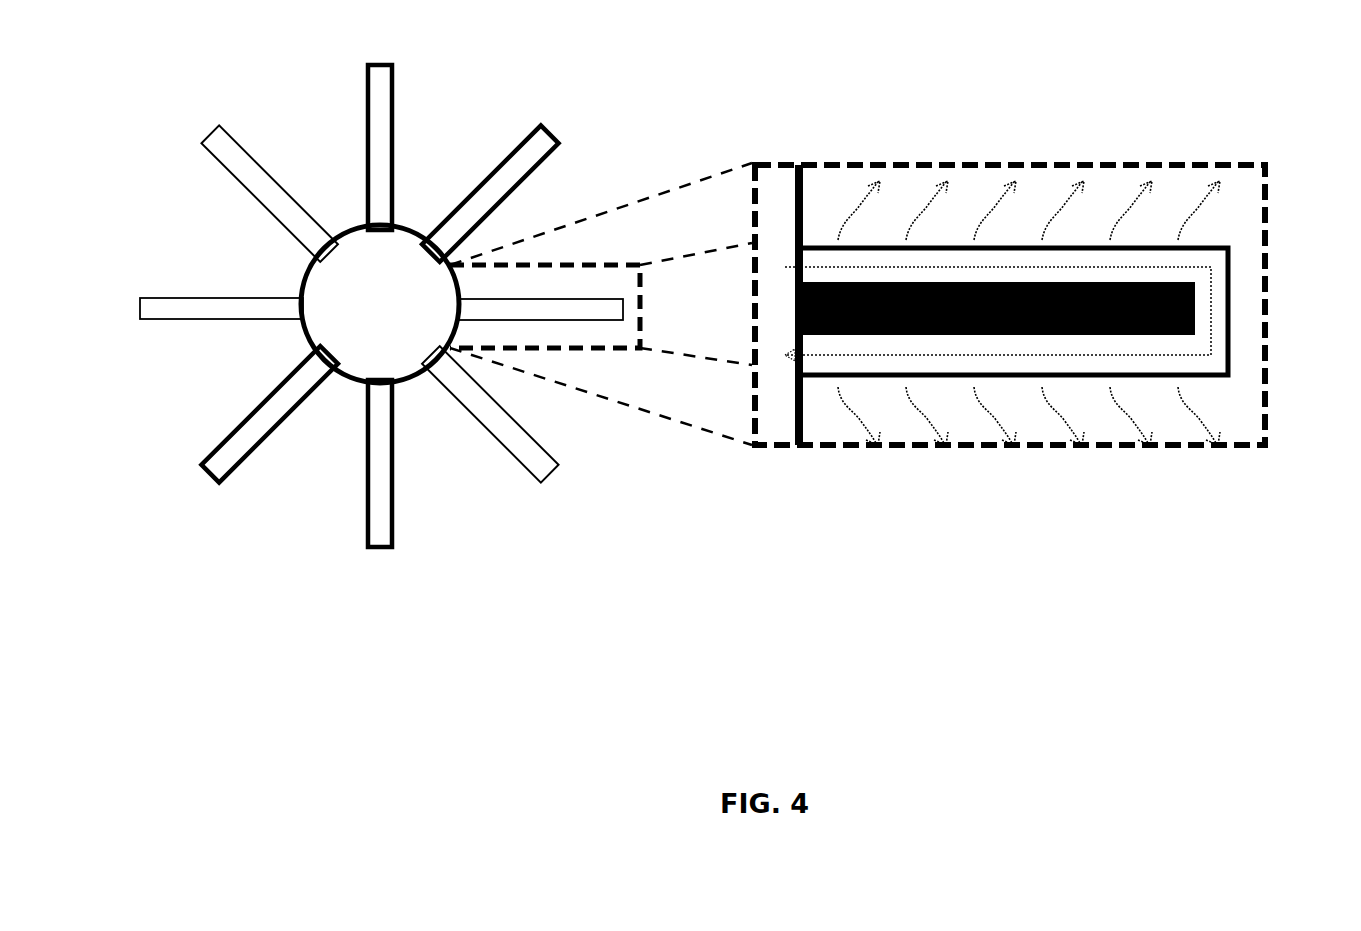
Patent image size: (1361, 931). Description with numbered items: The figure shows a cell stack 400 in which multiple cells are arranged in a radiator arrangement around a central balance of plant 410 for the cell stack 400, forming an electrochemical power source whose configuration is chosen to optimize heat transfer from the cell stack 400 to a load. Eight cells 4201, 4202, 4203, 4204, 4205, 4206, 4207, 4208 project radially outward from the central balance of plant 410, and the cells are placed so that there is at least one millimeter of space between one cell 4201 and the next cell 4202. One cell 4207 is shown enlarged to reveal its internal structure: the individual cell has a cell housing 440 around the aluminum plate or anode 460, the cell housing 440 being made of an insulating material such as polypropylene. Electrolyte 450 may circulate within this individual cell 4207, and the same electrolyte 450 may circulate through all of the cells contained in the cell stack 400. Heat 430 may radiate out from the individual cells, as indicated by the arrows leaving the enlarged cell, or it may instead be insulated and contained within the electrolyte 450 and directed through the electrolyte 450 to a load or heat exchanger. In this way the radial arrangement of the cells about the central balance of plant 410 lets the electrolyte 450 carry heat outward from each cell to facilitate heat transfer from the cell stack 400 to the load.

The cell stack 400 is at (785, 494).
The central balance of plant 410 is at (388, 318).
The cell 4201 is at (377, 142).
The cell 4202 is at (225, 152).
The cell 4203 is at (152, 307).
The cell 4204 is at (217, 440).
The cell 4205 is at (377, 533).
The cell 4206 is at (553, 467).
The cell 4207 is at (557, 307).
The cell 4208 is at (542, 128).
The heat 430 is at (1219, 206).
The cell housing 440 is at (1232, 268).
The electrolyte 450 is at (1211, 330).
The anode 460 is at (1195, 337).